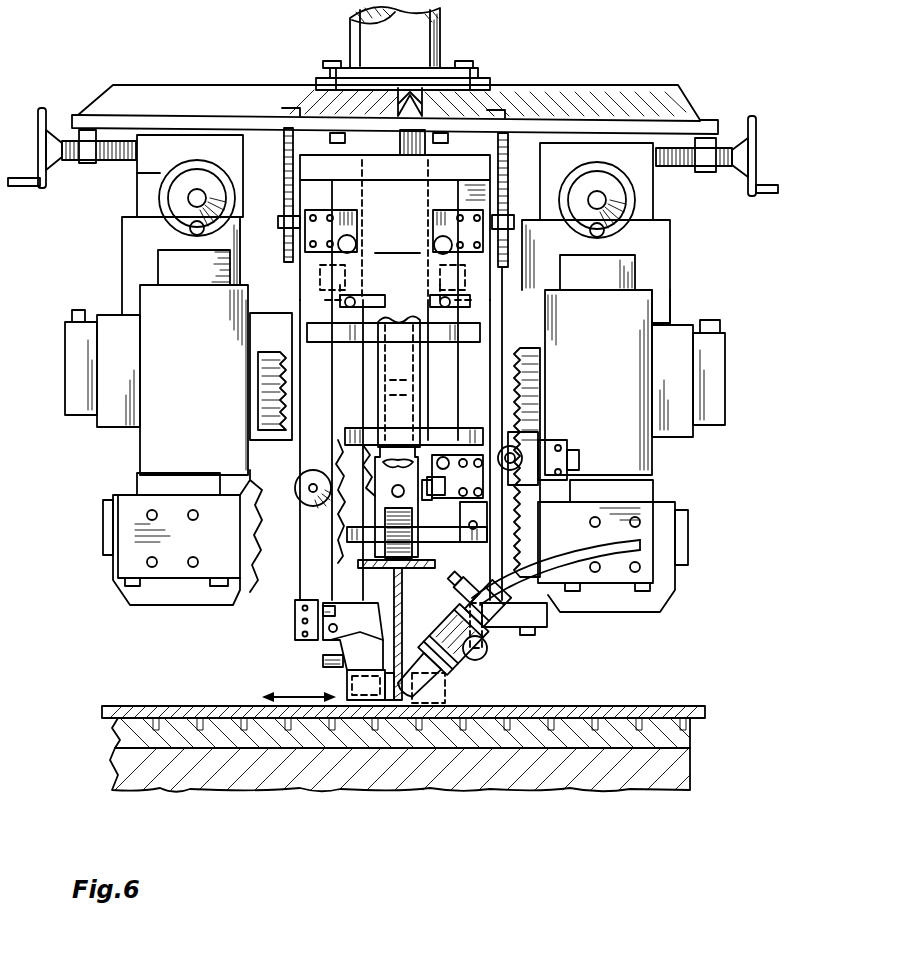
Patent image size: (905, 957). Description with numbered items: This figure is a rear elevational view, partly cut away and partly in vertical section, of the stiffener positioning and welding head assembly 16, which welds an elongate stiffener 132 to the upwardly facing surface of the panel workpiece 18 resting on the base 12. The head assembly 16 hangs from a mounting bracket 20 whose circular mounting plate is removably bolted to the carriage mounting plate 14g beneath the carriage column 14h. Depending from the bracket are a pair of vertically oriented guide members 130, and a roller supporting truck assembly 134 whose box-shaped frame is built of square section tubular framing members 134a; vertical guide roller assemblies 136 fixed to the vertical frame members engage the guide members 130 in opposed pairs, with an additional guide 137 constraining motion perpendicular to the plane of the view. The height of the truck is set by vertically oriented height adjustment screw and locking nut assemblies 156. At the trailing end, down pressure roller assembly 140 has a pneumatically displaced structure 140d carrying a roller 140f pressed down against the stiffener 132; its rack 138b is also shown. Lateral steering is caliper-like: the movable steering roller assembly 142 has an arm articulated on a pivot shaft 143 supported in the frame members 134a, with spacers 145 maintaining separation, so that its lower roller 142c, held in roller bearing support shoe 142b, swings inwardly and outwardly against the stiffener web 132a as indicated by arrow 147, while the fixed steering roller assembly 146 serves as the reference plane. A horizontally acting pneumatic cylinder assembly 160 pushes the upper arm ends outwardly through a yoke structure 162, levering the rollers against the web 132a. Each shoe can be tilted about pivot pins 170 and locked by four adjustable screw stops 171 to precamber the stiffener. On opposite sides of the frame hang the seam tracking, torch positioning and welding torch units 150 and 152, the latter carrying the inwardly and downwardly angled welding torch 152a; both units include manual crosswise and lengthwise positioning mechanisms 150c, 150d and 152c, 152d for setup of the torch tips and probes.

The workpiece base 12 is at (96, 790).
The carriage mounting plate 14g is at (470, 78).
The support column 14h is at (438, 44).
The welding torch and roller supporting head assembly 16 is at (680, 272).
The panel workpiece 18 is at (122, 706).
The mounting bracket 20 is at (650, 86).
The vertical guide members 130 is at (372, 258).
The stiffener 132 is at (352, 570).
The web 132a is at (330, 613).
The roller supporting truck assembly 134 is at (505, 282).
The tubular framing members 134a is at (445, 162).
The vertical guide roller assemblies 136 is at (318, 252).
The guide 137 is at (462, 522).
The rack 138b is at (286, 362).
The trailing down pressure roller assembly 140 is at (286, 396).
The structure 140d is at (385, 525).
The roller 140f is at (360, 547).
The steering roller assembly 142 is at (268, 536).
The roller bearing support shoe 142b is at (305, 683).
The roller 142c is at (386, 700).
The pivot shaft 143 is at (388, 482).
The spacers 145 is at (313, 470).
The steering roller assembly 146 is at (460, 582).
The arrow 147 is at (300, 718).
The seam tracking, torch positioning and welding torch unit 150 is at (130, 443).
The manual positioning mechanism 150c is at (42, 108).
The manual positioning mechanism 150d is at (160, 196).
The seam tracking, torch positioning and welding torch unit 152 is at (665, 458).
The welding torch 152a is at (440, 682).
The manual positioning mechanism 152c is at (752, 116).
The manual positioning mechanism 152d is at (636, 202).
The height adjustment screws and locking nut assemblies 156 is at (272, 198).
The pneumatic cylinder assembly 160 is at (420, 271).
The yoke structure 162 is at (330, 325).
The pivot pins 170 is at (325, 657).
The adjustable screw stops 171 is at (345, 700).